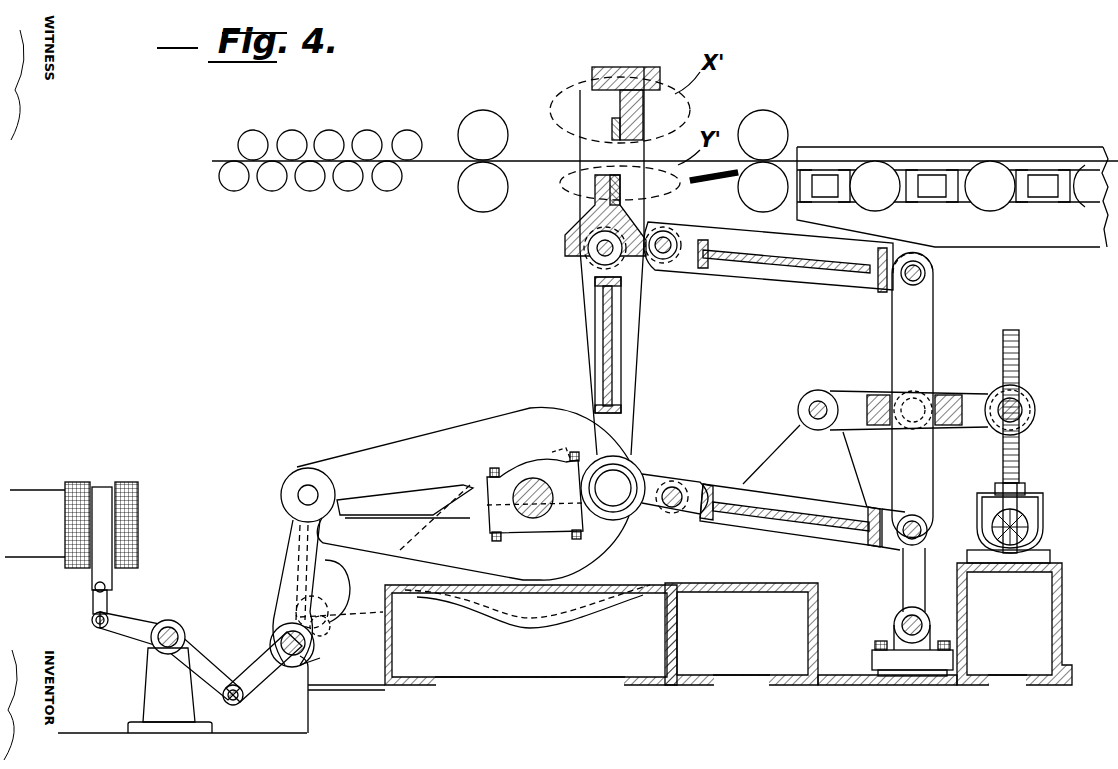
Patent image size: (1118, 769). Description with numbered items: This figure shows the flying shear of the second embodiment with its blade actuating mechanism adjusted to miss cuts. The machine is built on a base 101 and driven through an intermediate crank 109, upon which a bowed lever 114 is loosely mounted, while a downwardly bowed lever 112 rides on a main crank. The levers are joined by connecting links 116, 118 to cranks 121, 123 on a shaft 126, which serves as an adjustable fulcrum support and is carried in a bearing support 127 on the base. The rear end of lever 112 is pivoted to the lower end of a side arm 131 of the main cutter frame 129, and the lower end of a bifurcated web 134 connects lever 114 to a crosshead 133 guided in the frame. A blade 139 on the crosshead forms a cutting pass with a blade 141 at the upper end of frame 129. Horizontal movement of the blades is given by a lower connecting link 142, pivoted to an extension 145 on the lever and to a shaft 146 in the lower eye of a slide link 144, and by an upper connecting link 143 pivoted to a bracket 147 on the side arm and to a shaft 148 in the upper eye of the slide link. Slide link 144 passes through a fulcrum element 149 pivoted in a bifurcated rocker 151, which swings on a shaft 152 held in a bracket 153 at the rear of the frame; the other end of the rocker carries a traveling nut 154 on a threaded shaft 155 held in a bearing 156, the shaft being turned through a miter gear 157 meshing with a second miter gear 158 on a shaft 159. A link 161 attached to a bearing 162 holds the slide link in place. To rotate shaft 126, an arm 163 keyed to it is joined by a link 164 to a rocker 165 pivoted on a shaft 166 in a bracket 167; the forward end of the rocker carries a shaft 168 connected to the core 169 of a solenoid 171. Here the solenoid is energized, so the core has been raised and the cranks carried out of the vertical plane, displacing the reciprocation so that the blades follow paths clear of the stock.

The base 101 is at (680, 622).
The intermediate crank 109 is at (535, 520).
The downwardly bowed lever 112 is at (510, 587).
The oppositely bowed lever 114 is at (364, 453).
The connecting link 116 is at (276, 536).
The connecting link 118 is at (285, 570).
The crank 121 is at (335, 622).
The crank 123 is at (320, 660).
The shaft 126 is at (332, 642).
The bearing support 127 is at (348, 685).
The main cutter frame 129 is at (633, 67).
The side arm 131 is at (636, 322).
The crosshead 133 is at (567, 240).
The bifurcated web 134 is at (622, 363).
The blade 139 is at (627, 195).
The blade 141 is at (620, 118).
The connecting link 142 is at (802, 528).
The connecting link 143 is at (772, 266).
The slide link 144 is at (925, 302).
The extension 145 is at (658, 465).
The shaft 146 is at (920, 514).
The bracket 147 is at (675, 232).
The shaft 148 is at (926, 272).
The fulcrum element 149 is at (930, 390).
The bifurcated rocker 151 is at (850, 389).
The shaft 152 is at (815, 400).
The bracket 153 is at (790, 440).
The traveling nut 154 is at (1022, 392).
The threaded shaft 155 is at (1018, 335).
The bearing 156 is at (1015, 490).
The miter gear 157 is at (1035, 495).
The miter gear 158 is at (1030, 522).
The shaft 159 is at (1032, 548).
The link 161 is at (903, 583).
The bearing 162 is at (894, 625).
The arm 163 is at (288, 630).
The link 164 is at (252, 690).
The rocker 165 is at (205, 648).
The shaft 166 is at (168, 626).
The bracket 167 is at (148, 691).
The shaft 168 is at (93, 620).
The core 169 is at (90, 572).
The solenoid 171 is at (138, 484).